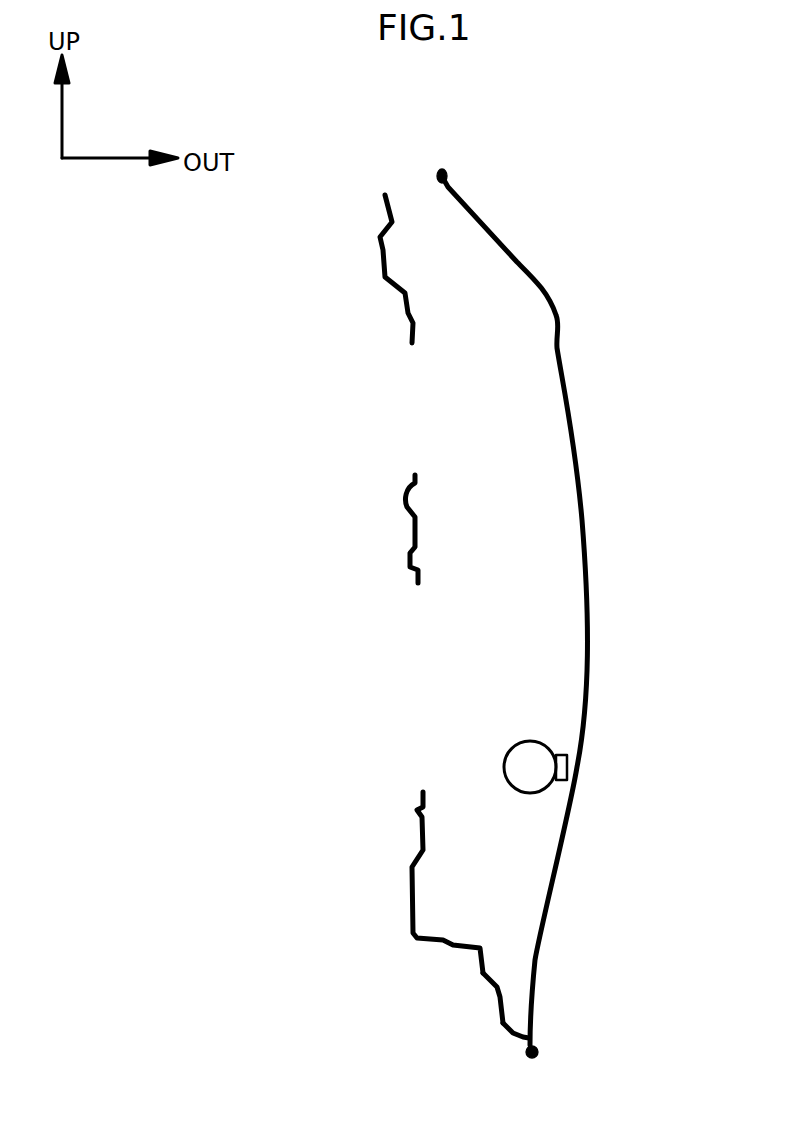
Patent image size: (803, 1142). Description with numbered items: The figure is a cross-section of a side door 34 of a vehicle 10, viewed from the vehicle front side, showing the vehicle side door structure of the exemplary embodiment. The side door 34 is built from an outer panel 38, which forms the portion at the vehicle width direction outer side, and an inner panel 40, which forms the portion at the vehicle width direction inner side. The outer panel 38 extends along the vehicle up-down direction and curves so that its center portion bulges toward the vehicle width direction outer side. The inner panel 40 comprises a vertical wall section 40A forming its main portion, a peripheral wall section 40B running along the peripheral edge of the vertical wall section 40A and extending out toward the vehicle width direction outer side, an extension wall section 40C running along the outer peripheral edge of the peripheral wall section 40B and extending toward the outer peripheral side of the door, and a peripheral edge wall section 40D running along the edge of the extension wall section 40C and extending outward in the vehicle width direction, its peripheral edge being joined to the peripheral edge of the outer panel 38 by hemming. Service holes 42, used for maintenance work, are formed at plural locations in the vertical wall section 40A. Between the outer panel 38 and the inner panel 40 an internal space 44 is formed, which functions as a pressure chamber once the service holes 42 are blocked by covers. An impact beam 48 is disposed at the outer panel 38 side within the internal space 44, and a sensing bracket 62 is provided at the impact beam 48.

The vehicle 10 is at (560, 148).
The side door 34 is at (575, 278).
The outer panel 38 is at (577, 452).
The inner panel 40 is at (378, 278).
The vertical wall section 40A is at (413, 520).
The peripheral wall section 40B is at (433, 937).
The extension wall section 40C is at (500, 985).
The peripheral edge wall section 40D is at (522, 1036).
The service holes 42 is at (412, 343).
The internal space 44 is at (489, 357).
The impact beam 48 is at (525, 742).
The sensing bracket 62 is at (575, 767).